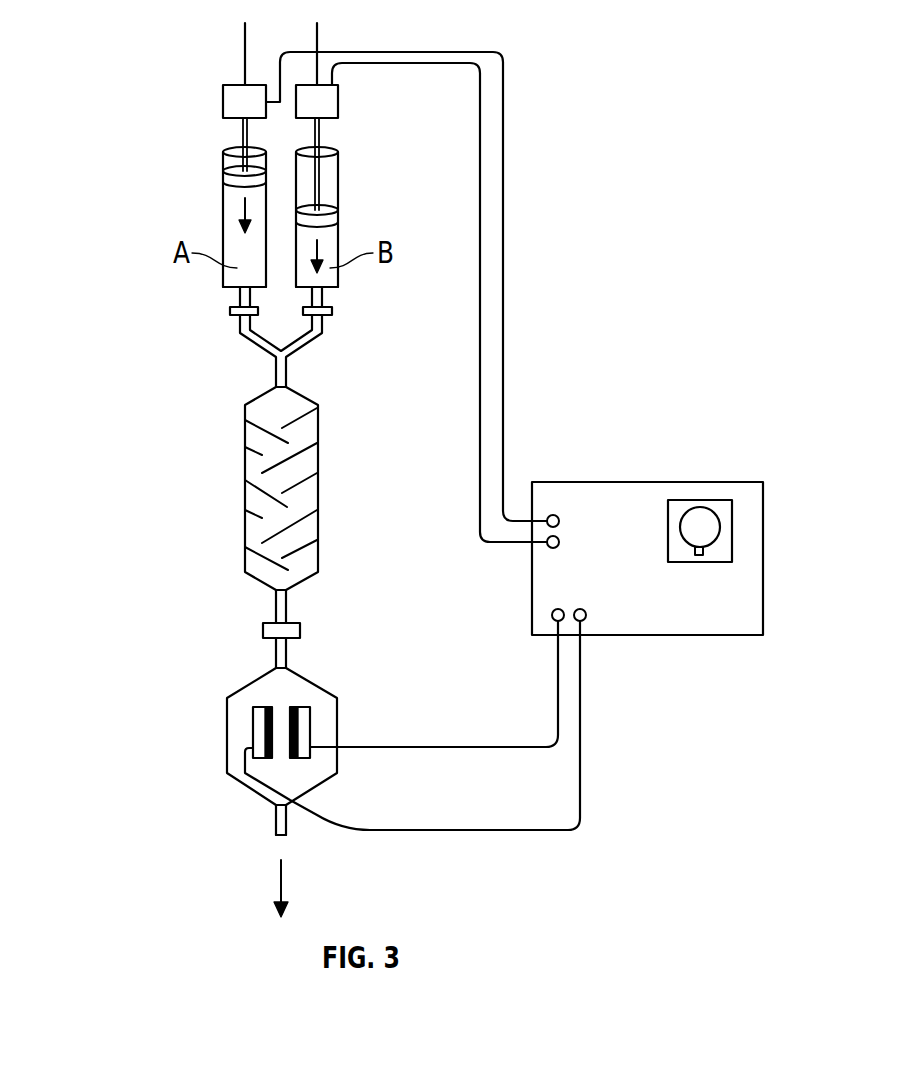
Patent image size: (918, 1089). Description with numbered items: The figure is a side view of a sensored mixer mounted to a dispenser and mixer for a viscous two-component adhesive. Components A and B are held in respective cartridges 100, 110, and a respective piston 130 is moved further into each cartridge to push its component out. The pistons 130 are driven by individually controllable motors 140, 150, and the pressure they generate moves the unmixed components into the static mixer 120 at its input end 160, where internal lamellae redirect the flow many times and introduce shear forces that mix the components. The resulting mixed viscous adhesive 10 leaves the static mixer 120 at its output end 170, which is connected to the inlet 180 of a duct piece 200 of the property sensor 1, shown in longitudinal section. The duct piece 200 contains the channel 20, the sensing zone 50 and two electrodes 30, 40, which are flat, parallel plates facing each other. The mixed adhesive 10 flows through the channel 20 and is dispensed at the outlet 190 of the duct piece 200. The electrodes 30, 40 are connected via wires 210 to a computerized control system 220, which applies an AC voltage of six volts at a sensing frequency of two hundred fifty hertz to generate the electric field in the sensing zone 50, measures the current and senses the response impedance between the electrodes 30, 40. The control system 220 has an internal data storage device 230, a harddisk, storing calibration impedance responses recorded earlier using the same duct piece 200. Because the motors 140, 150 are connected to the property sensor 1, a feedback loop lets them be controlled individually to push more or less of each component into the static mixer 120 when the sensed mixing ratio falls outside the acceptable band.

The property sensor 1 is at (753, 375).
The mixed viscous adhesive 10 is at (282, 578).
The channel 20 is at (287, 687).
The electrode 30 is at (278, 708).
The electrode 40 is at (283, 757).
The sensing zone 50 is at (280, 732).
The cartridge 100 is at (223, 218).
The cartridge 110 is at (338, 183).
The static mixer 120 is at (245, 475).
The piston 130 is at (227, 183).
The motor 140 is at (223, 100).
The motor 150 is at (338, 100).
The input end 160 is at (276, 377).
The output end 170 is at (276, 603).
The inlet 180 is at (276, 645).
The outlet 190 is at (276, 820).
The duct piece 200 is at (284, 724).
The wires 210 is at (578, 717).
The computerized control system 220 is at (647, 523).
The internal data storage device 230 is at (685, 563).